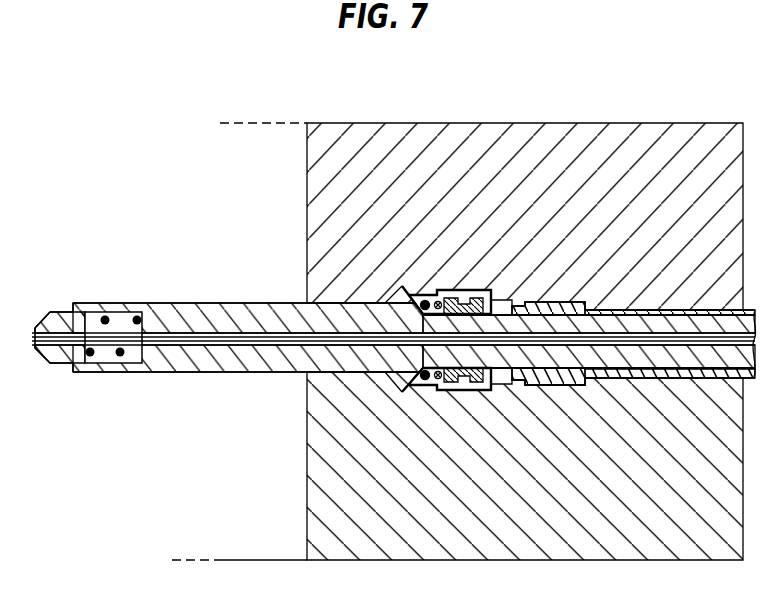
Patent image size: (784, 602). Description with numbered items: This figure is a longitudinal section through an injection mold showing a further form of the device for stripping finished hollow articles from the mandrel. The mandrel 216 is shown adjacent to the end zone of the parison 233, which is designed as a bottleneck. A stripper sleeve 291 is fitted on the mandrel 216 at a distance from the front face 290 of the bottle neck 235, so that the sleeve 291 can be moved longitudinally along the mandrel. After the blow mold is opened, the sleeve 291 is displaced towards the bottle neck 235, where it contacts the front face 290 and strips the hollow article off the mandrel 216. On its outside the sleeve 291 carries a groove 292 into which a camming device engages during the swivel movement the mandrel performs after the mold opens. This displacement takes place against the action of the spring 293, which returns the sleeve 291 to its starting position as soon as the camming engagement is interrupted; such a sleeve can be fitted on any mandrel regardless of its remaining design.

The mandrel 216 is at (230, 373).
The parison 233 is at (662, 310).
The bottle neck 235 is at (557, 302).
The front face of the bottle neck 290 is at (497, 391).
The stripper sleeve 291 is at (488, 298).
The groove 292 is at (464, 290).
The spring 293 is at (425, 300).